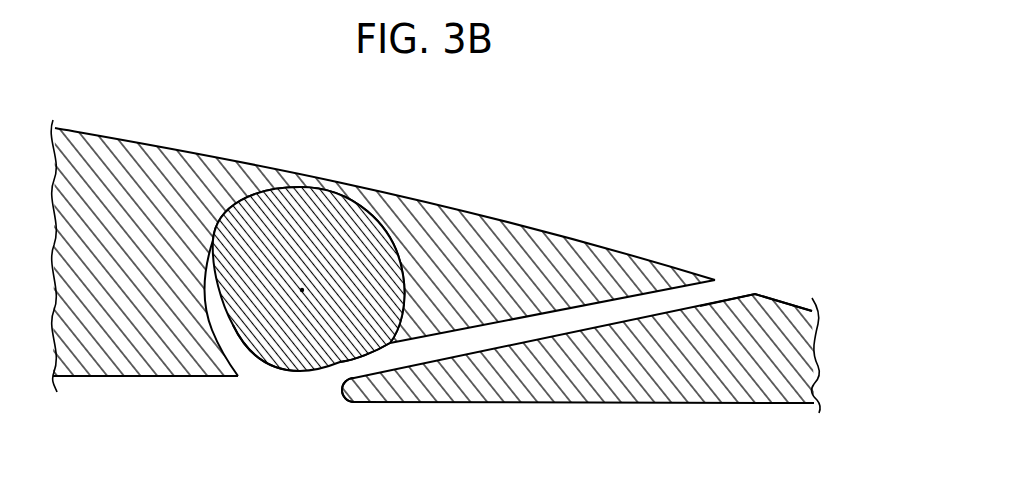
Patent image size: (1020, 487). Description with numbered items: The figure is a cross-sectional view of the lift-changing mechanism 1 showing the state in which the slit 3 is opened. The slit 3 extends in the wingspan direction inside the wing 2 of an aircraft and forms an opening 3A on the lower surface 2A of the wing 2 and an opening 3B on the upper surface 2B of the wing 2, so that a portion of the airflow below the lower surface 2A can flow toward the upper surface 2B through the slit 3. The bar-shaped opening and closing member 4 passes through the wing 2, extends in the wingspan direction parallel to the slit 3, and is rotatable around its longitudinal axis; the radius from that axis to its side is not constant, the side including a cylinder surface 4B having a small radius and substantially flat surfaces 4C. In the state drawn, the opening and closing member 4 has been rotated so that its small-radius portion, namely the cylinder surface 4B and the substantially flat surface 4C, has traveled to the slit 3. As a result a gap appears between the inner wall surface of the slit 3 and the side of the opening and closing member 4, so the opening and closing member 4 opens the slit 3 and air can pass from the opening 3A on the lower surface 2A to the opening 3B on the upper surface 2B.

The lift-changing mechanism 1 is at (562, 202).
The wing 2 is at (134, 123).
The lower surface 2A is at (132, 378).
The upper surface 2B is at (240, 156).
The slit 3 is at (498, 345).
The opening 3A is at (320, 388).
The opening 3B is at (729, 281).
The opening and closing member 4 is at (312, 237).
The cylinder surface having a small radius 4B is at (275, 364).
The substantially flat surface 4C is at (354, 362).